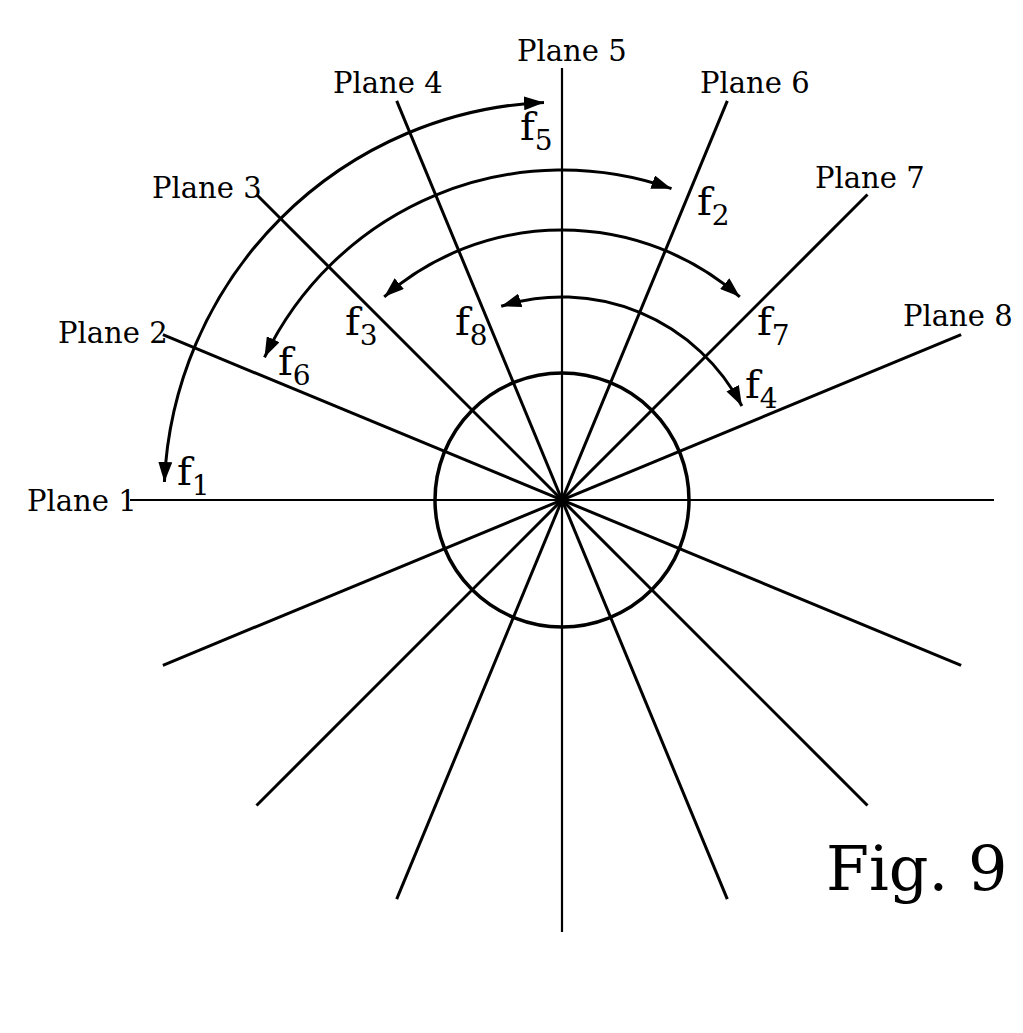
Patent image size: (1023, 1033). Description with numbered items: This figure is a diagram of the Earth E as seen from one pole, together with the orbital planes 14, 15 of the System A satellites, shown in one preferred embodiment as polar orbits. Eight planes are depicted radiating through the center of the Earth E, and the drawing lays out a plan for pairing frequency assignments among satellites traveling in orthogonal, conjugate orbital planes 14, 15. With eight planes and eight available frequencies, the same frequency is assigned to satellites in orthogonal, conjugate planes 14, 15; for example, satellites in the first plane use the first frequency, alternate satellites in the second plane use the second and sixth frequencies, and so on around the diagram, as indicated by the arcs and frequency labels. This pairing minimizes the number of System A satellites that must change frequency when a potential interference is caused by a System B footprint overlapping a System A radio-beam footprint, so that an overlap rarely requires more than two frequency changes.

The orbital plane 14 is at (870, 628).
The orbital plane 15 is at (563, 120).
The Earth E is at (663, 573).